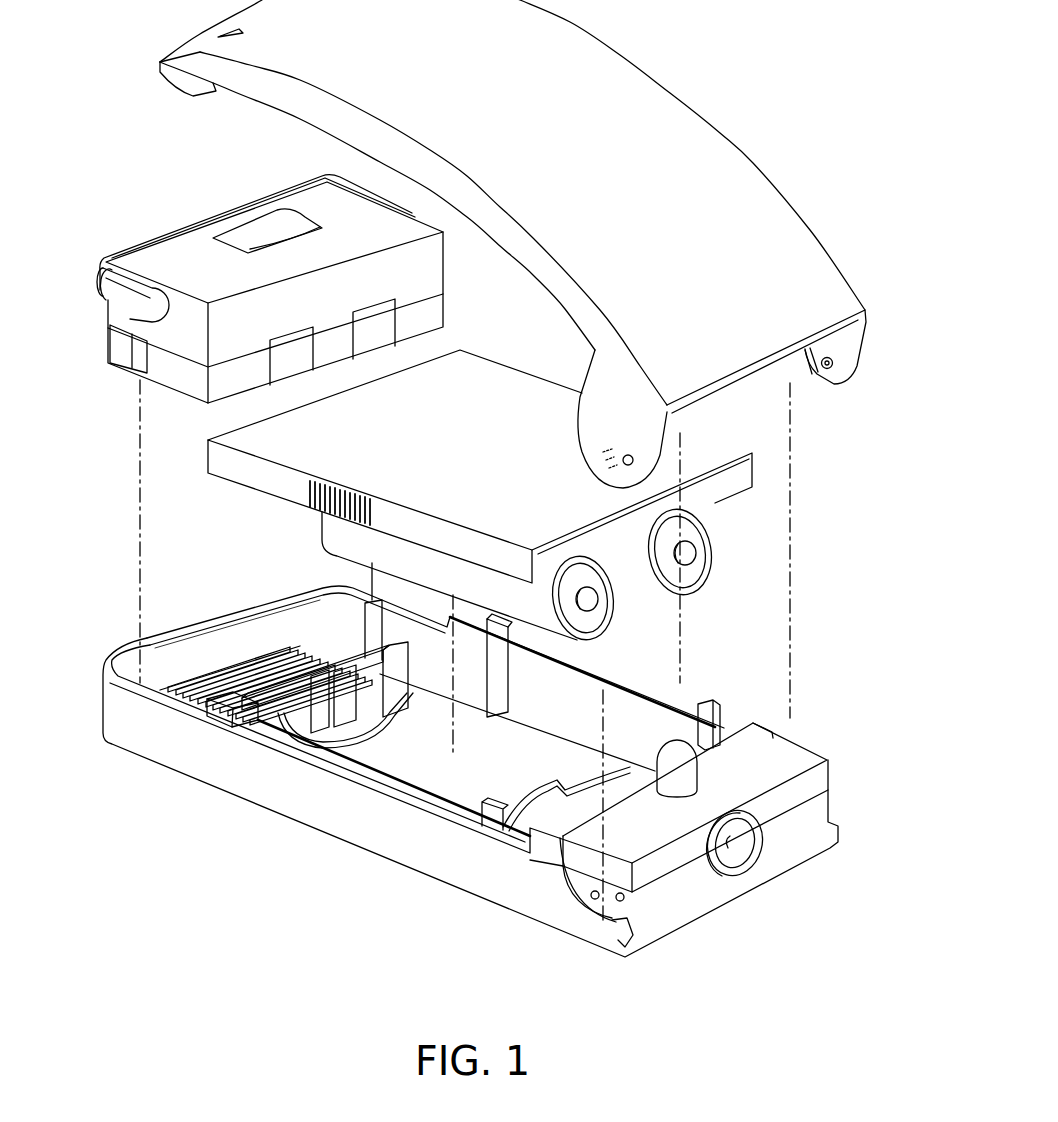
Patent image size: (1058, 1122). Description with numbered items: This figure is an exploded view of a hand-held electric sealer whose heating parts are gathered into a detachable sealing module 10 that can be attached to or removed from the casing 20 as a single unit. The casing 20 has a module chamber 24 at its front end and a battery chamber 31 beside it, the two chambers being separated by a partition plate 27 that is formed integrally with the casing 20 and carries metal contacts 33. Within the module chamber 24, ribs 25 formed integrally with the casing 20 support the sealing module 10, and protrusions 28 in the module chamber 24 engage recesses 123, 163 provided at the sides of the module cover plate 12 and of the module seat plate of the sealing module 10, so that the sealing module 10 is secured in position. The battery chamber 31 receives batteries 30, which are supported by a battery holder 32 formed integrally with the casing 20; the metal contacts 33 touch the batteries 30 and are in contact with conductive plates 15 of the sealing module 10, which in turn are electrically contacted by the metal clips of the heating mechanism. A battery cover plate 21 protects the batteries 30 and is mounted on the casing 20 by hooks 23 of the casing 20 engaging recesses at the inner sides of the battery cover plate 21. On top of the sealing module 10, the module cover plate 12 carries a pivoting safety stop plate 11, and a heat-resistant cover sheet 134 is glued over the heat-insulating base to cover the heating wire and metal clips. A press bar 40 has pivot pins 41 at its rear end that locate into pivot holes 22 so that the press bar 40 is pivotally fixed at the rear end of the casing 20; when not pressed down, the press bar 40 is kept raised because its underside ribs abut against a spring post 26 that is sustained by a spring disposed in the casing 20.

The sealing module 10 is at (183, 372).
The safety stop plate 11 is at (121, 300).
The module cover plate 12 is at (320, 202).
The conductive plates 15 is at (383, 323).
The casing 20 is at (408, 872).
The battery cover plate 21 is at (278, 455).
The pivot holes 22 is at (603, 904).
The hooks 23 is at (490, 818).
The module chamber 24 is at (227, 637).
The ribs 25 is at (290, 650).
The spring post 26 is at (677, 750).
The partition plate 27 is at (245, 706).
The protrusions 28 is at (140, 687).
The batteries 30 is at (700, 567).
The battery chamber 31 is at (530, 747).
The battery holder 32 is at (377, 741).
The metal contacts 33 is at (292, 712).
The press bar 40 is at (747, 176).
The pivot pins 41 is at (828, 369).
The recesses 123 is at (130, 330).
The heat-resistant cover sheet 134 is at (255, 230).
The recesses 163 is at (137, 353).